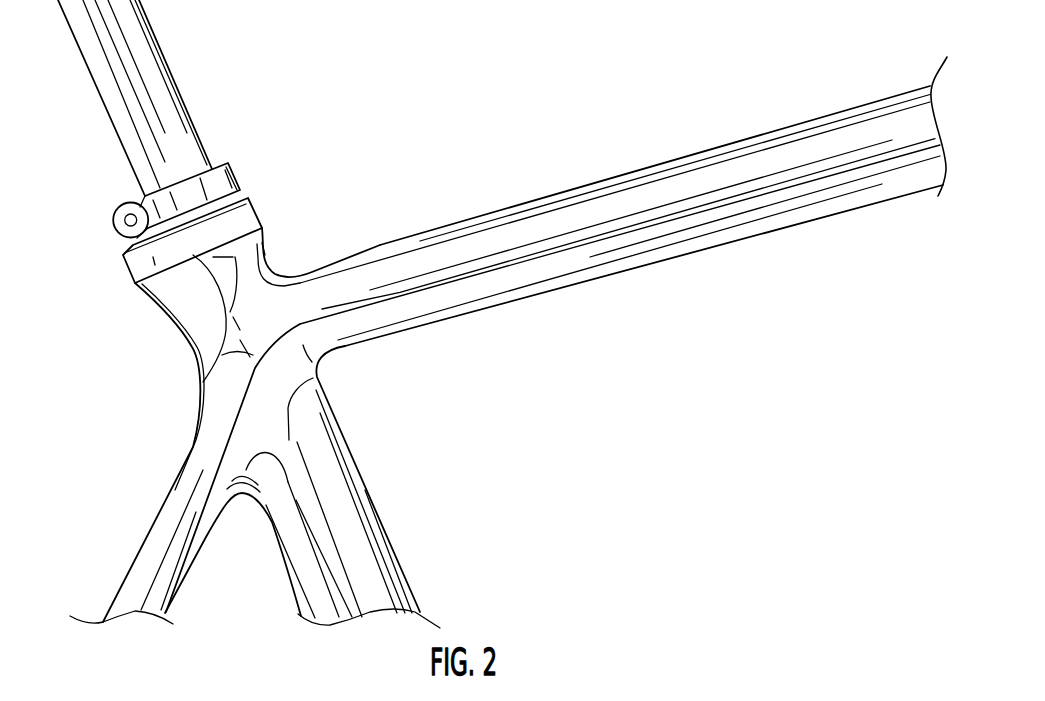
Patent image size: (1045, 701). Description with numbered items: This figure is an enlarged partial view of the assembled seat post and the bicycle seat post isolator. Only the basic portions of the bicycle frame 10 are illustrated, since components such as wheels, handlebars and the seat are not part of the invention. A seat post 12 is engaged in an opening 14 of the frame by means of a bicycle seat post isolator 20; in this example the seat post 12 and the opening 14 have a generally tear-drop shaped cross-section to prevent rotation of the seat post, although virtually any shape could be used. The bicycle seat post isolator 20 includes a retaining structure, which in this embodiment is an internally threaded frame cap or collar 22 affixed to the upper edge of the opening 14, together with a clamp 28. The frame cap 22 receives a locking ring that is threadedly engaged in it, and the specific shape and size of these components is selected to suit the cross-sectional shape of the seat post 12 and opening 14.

The bicycle frame 10 is at (579, 219).
The seat post 12 is at (167, 58).
The opening 14 is at (138, 285).
The bicycle seat post isolator 20 is at (185, 166).
The frame cap 22 is at (258, 221).
The clamp 28 is at (113, 225).